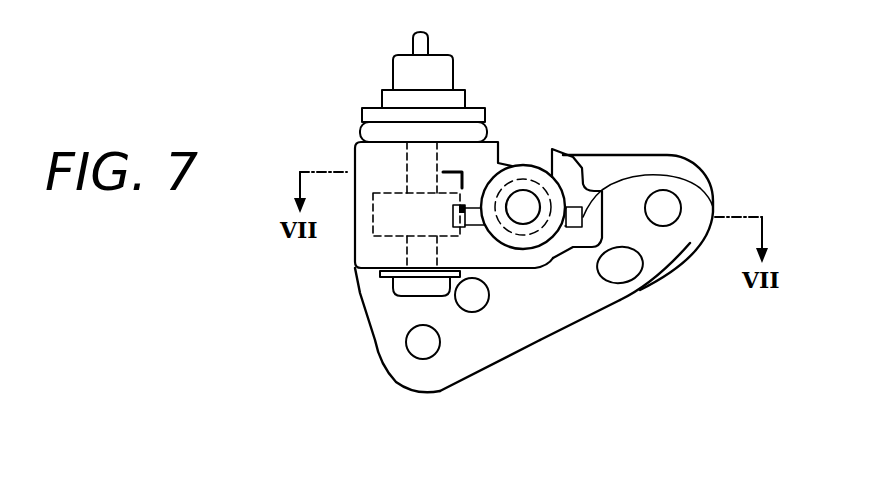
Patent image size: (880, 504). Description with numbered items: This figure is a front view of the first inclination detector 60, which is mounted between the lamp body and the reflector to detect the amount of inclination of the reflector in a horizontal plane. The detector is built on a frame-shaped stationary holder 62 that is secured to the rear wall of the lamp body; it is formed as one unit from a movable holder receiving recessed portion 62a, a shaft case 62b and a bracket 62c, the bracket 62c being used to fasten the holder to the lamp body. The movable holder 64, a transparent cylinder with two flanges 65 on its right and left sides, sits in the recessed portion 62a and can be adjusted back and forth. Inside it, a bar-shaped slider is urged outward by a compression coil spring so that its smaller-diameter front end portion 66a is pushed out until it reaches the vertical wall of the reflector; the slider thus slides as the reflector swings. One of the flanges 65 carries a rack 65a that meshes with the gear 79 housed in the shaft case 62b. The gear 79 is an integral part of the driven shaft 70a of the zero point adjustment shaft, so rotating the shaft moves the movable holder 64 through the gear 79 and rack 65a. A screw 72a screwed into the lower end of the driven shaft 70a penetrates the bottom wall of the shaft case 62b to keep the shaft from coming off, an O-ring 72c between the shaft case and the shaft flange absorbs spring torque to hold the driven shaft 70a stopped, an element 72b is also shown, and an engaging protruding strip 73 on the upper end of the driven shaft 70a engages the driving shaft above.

The first inclination detector 60 is at (620, 147).
The stationary holder 62 is at (665, 412).
The movable holder receiving recessed portion 62a is at (545, 243).
The shaft case 62b is at (478, 255).
The bracket 62c is at (570, 327).
The movable holder 64 is at (515, 165).
The flanges 65 is at (470, 200).
The rack 65a is at (453, 218).
The front end portion of the slider 66a is at (533, 202).
The driven shaft 70a is at (352, 80).
The screw 72a is at (417, 295).
The upper plate 72b is at (362, 115).
The O-ring 72c is at (362, 136).
The engaging protruding strip 73 is at (405, 63).
The gear 79 is at (393, 234).